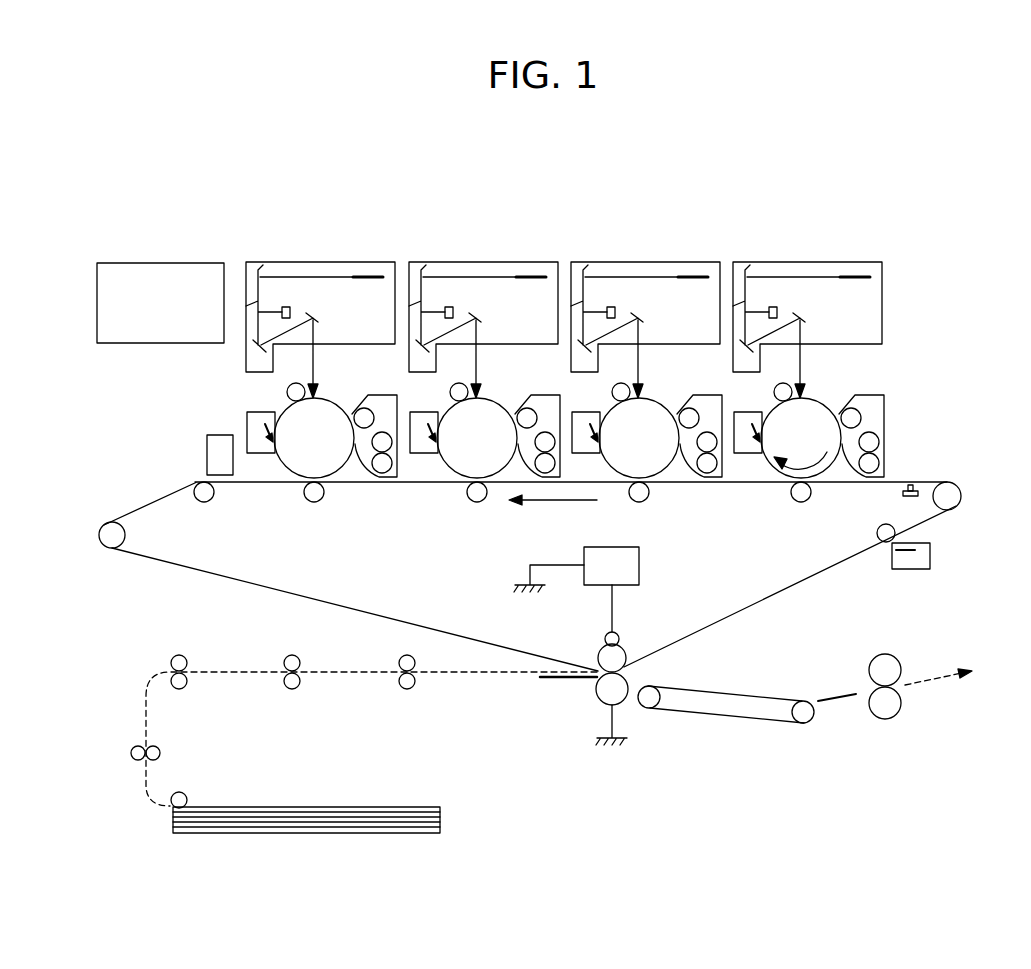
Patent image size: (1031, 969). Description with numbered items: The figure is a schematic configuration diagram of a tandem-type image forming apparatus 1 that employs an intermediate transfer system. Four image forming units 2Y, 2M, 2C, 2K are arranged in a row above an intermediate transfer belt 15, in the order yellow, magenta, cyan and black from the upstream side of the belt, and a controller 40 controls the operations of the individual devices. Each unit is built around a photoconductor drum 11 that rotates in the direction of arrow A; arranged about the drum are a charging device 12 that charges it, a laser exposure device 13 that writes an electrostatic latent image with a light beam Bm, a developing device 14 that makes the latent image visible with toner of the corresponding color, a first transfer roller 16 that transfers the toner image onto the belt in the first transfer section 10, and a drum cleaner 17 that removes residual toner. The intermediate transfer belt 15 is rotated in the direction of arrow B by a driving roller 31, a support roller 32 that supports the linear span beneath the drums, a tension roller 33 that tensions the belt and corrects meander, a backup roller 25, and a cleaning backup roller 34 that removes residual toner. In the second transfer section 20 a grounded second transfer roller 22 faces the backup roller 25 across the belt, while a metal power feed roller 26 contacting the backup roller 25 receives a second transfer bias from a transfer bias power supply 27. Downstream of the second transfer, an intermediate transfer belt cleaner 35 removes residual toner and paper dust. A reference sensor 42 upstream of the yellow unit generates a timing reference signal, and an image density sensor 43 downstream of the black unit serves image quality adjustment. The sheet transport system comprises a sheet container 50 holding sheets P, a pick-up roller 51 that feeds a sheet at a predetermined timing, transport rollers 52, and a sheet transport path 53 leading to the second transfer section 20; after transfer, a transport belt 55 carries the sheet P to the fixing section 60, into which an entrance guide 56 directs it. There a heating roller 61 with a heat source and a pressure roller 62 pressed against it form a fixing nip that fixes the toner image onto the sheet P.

The image forming apparatus 1 is at (556, 197).
The image forming unit for black 2K is at (313, 238).
The image forming unit for cyan 2C is at (476, 238).
The image forming unit for magenta 2M is at (640, 238).
The image forming unit for yellow 2Y is at (817, 365).
The first transfer section 10 is at (555, 570).
The photoconductor drum 11 is at (835, 410).
The charging device 12 is at (776, 392).
The laser exposure device 13 is at (882, 300).
The developing device 14 is at (884, 420).
The intermediate transfer belt 15 is at (443, 630).
The first transfer roller 16 is at (800, 503).
The drum cleaner 17 is at (739, 455).
The second transfer section 20 is at (619, 653).
The second transfer roller 22 is at (600, 703).
The backup roller 25 is at (624, 650).
The power feed roller 26 is at (605, 637).
The transfer bias power supply 27 is at (639, 570).
The driving roller 31 is at (950, 497).
The support roller 32 is at (210, 497).
The tension roller 33 is at (125, 532).
The cleaning backup roller 34 is at (880, 533).
The intermediate transfer belt cleaner 35 is at (930, 562).
The controller 40 is at (143, 262).
The reference sensor 42 is at (912, 497).
The image density sensor 43 is at (207, 440).
The sheet container 50 is at (440, 814).
The pick-up roller 51 is at (179, 792).
The transport rollers 52 is at (170, 662).
The sheet transport path 53 is at (545, 680).
The transport belt 55 is at (745, 720).
The entrance guide 56 is at (833, 702).
The fixing section 60 is at (926, 690).
The heating roller 61 is at (885, 654).
The pressure roller 62 is at (885, 719).
The sheet P is at (305, 806).
The arrow A is at (800, 455).
The arrow B is at (553, 511).
The light beam Bm is at (803, 362).